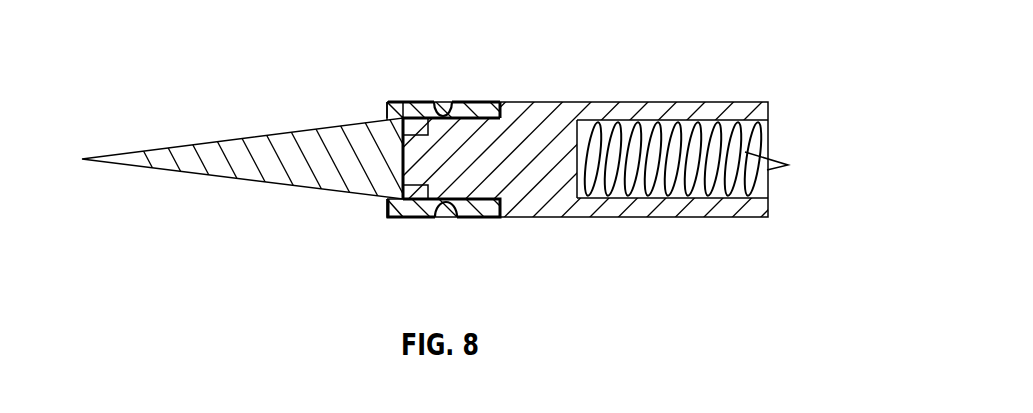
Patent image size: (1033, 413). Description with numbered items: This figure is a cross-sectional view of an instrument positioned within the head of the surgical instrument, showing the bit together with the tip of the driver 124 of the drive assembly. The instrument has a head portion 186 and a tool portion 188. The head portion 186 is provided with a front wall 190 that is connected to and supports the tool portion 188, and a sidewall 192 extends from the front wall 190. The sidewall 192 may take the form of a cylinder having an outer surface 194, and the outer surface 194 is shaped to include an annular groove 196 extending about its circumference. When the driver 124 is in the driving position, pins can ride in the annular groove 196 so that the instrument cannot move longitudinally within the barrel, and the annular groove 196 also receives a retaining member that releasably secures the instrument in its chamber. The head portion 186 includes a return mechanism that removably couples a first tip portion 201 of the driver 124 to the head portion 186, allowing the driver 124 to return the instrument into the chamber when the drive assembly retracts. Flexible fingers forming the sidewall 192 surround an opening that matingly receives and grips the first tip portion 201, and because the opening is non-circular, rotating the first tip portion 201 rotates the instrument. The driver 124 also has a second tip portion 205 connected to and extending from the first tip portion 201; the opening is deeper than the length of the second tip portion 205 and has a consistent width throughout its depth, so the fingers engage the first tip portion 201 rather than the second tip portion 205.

The driver 124 is at (642, 102).
The head portion 186 is at (435, 104).
The tool portion 188 is at (208, 142).
The front wall 190 is at (411, 209).
The sidewall 192 is at (492, 102).
The outer surface 194 is at (485, 214).
The annular groove 196 is at (445, 103).
The first tip portion 201 is at (448, 209).
The second tip portion 205 is at (390, 101).